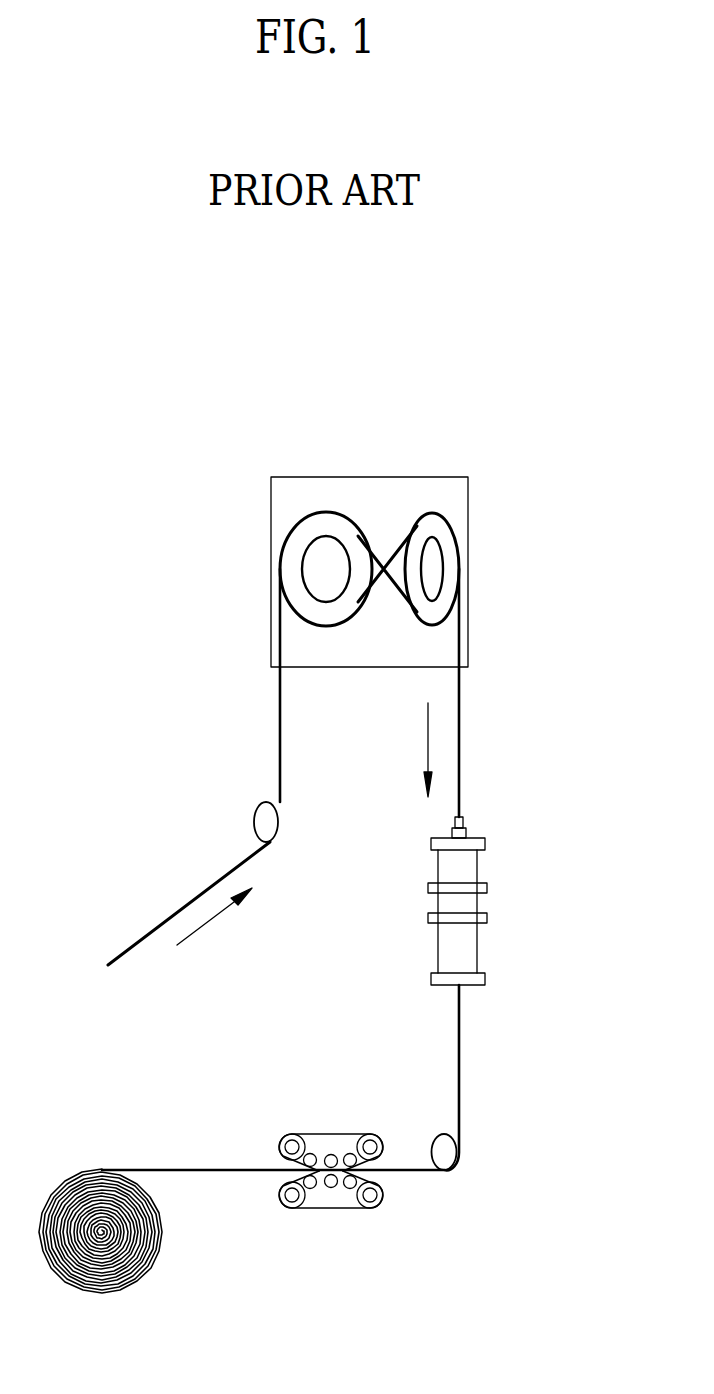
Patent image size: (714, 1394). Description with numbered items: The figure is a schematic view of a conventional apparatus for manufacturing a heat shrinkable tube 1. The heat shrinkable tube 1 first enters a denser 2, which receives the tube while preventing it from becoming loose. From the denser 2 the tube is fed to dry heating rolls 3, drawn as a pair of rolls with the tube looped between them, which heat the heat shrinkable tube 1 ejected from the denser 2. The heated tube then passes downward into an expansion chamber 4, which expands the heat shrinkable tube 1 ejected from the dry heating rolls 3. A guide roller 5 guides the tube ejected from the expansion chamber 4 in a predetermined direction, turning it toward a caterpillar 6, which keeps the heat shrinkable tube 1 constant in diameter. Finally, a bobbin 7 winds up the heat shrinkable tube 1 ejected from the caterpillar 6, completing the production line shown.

The heat shrinkable tube 1 is at (462, 708).
The denser 2 is at (253, 812).
The dry heating rolls 3 is at (338, 525).
The expansion chamber 4 is at (462, 948).
The guide roller 5 is at (433, 1128).
The caterpillar 6 is at (330, 1210).
The bobbin 7 is at (147, 1258).